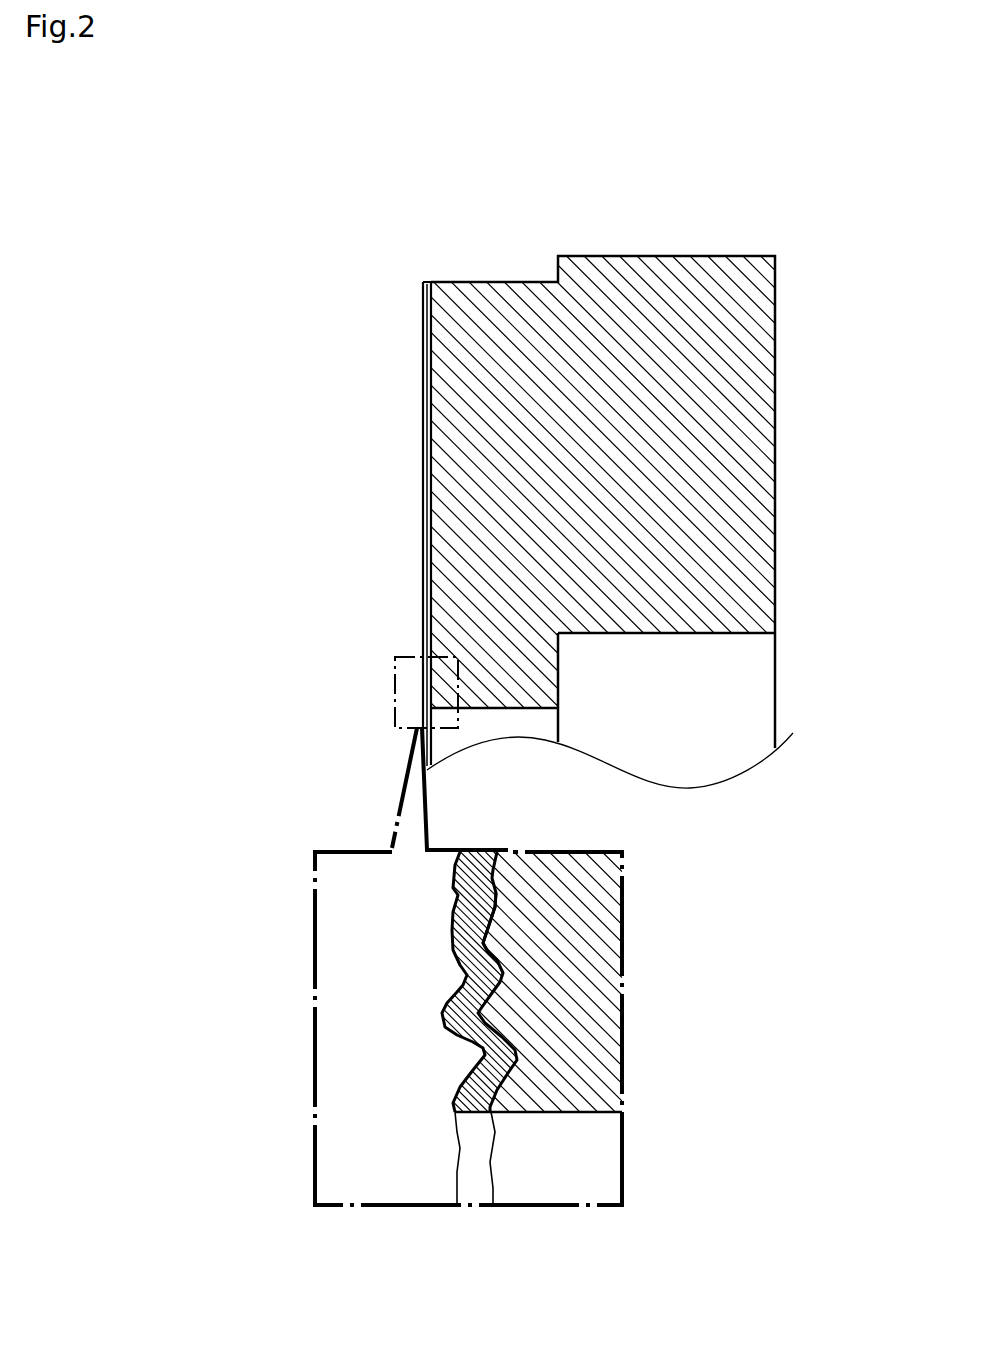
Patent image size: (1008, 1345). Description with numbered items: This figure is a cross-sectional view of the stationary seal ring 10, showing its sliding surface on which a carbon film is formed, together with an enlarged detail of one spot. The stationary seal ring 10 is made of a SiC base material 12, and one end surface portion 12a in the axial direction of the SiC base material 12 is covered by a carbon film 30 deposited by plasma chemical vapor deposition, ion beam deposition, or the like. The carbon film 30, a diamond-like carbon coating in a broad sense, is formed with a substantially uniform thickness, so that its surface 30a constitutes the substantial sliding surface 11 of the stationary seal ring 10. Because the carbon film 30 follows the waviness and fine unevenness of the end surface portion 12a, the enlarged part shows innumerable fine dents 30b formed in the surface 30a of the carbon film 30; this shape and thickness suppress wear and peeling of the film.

The stationary seal ring 10 is at (685, 244).
The SiC base material 12 is at (508, 300).
The carbon film 30 is at (423, 302).
The sliding surface 11 is at (422, 502).
The end surface portion 12a is at (453, 957).
The surface of the carbon film 30a is at (443, 1015).
The fine dents 30b is at (465, 1050).